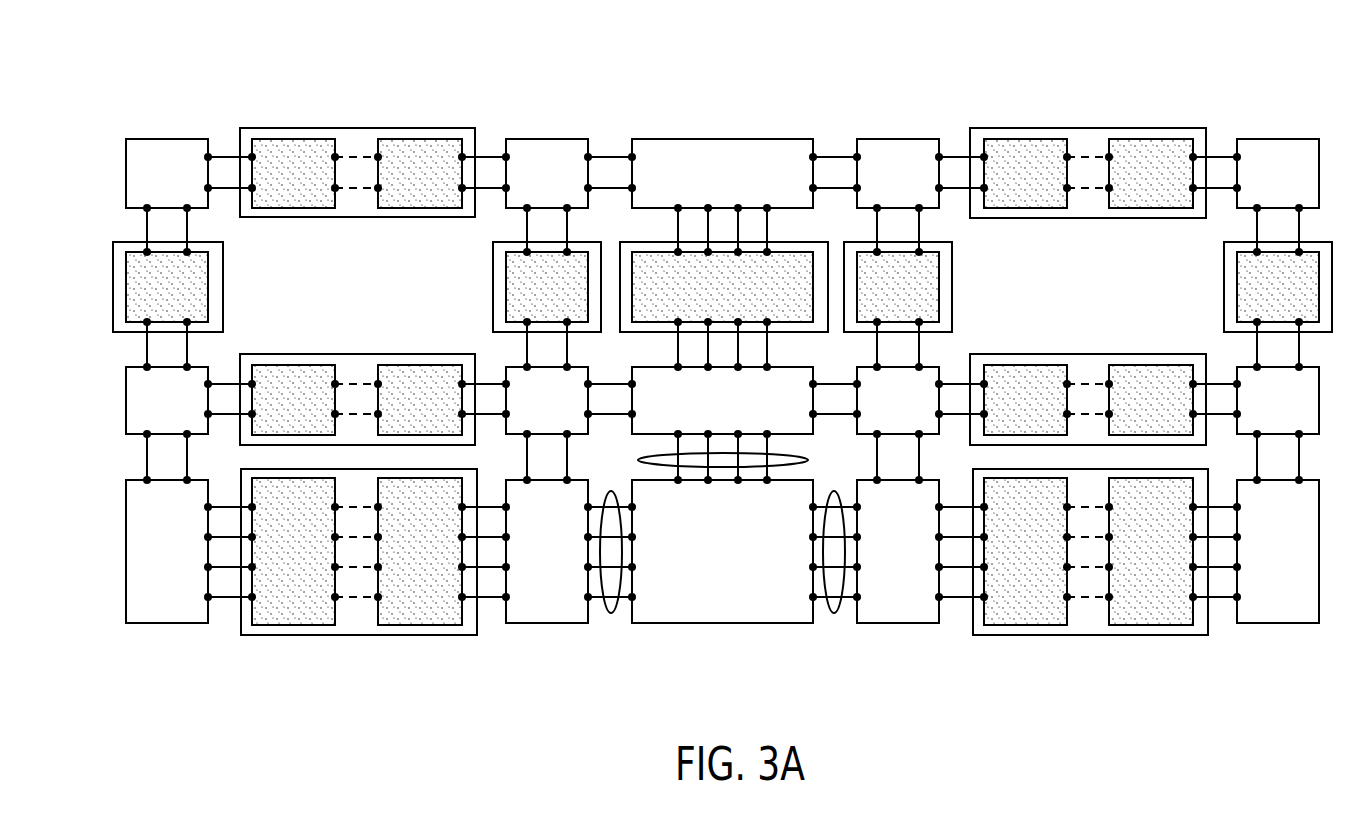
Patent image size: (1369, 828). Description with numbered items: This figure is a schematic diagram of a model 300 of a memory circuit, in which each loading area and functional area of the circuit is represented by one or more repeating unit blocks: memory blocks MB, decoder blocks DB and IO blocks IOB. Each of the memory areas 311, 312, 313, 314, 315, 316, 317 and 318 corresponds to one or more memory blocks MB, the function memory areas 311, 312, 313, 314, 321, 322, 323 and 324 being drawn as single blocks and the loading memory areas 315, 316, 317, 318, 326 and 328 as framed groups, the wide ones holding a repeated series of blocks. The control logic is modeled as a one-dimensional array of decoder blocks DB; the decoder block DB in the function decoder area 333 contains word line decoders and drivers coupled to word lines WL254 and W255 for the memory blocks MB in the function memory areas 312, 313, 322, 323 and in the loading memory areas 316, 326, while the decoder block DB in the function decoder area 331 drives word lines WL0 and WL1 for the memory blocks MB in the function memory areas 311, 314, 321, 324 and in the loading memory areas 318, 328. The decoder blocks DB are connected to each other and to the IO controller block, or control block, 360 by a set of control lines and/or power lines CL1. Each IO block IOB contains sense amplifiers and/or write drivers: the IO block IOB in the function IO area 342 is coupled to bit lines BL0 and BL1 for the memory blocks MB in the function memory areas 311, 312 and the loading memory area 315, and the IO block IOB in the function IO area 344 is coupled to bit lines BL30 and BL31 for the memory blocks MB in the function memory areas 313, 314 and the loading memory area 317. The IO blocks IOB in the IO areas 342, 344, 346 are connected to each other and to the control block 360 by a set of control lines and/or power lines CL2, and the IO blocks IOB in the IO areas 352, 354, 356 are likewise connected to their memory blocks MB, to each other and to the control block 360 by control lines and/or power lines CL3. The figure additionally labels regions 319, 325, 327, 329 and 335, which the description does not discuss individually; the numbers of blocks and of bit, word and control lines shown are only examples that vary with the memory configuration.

The model 300 is at (885, 73).
The function memory area 311 is at (126, 402).
The function memory area 312 is at (167, 139).
The function memory area 313 is at (547, 139).
The function memory area 314 is at (504, 366).
The loading memory area 315 is at (112, 262).
The loading memory area 316 is at (357, 128).
The loading memory area 317 is at (493, 303).
The loading memory area 318 is at (353, 354).
The left memory block region 319 is at (430, 266).
The function memory area 321 is at (940, 366).
The function memory area 322 is at (898, 139).
The function memory area 323 is at (1272, 139).
The function memory area 324 is at (1319, 413).
The memory block MB (edge column) 325 is at (953, 278).
The loading memory area 326 is at (1085, 128).
The connection to memory block 327 is at (1332, 300).
The loading memory area 328 is at (1092, 354).
The right memory block region 329 is at (1200, 264).
The function decoder area 331 is at (800, 435).
The function decoder area 333 is at (718, 139).
The decoder block DB (column) 335 is at (795, 332).
The function IO area 342 is at (126, 490).
The function IO area 344 is at (545, 623).
The IO area 346 is at (368, 635).
The IO area 352 is at (895, 623).
The IO area 354 is at (1272, 623).
The IO area 356 is at (1080, 635).
The IO controller block 360 is at (718, 623).
The word line WL255 W255 is at (225, 155).
The word line WL254 is at (225, 190).
The word line WL1 is at (225, 382).
The word line WL0 is at (226, 416).
The bit line BL0 is at (147, 347).
The bit line BL1 is at (188, 357).
The bit line BL30 is at (525, 220).
The bit line BL31 is at (567, 233).
The control lines and/or power lines CL1 is at (640, 460).
The control lines and/or power lines CL2 is at (611, 613).
The control lines and/or power lines CL3 is at (834, 613).